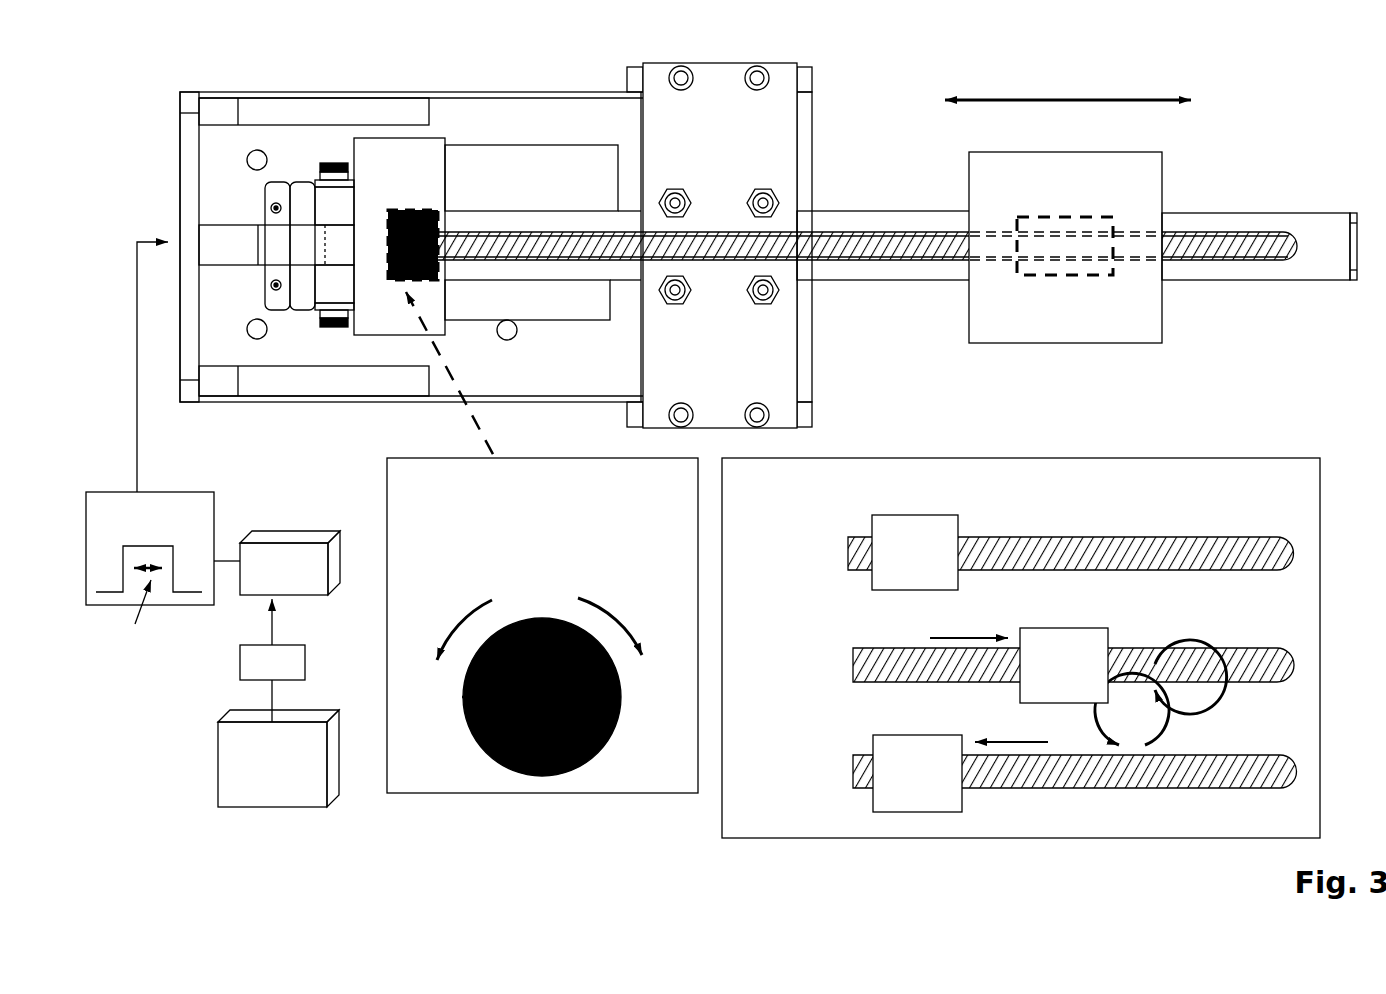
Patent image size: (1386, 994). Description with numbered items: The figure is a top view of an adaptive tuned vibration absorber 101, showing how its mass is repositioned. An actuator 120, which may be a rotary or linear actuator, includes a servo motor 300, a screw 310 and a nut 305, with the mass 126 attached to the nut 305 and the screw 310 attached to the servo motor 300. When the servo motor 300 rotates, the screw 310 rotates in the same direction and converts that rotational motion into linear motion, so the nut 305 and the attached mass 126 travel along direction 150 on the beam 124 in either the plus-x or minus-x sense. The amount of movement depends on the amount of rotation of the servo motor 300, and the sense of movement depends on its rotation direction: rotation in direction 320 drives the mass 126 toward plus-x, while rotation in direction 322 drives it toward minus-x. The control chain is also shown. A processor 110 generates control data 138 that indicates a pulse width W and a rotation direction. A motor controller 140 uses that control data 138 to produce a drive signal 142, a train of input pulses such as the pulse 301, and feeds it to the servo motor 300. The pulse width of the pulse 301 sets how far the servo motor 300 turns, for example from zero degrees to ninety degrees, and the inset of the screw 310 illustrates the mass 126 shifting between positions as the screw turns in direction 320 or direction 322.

The actuator assembly 101 is at (1330, 127).
The actuator 120 is at (430, 152).
The servo motor 300 is at (458, 498).
The screw 310 is at (898, 242).
The nut 305 is at (1036, 218).
The mass 126 is at (1029, 310).
The beam 124 is at (1316, 254).
The direction 150 is at (1067, 97).
The rotation direction 320 is at (902, 640).
The rotation direction 322 is at (790, 676).
The drive signal 142 is at (186, 490).
The pulse 301 is at (148, 543).
The motor controller 140 is at (267, 581).
The control data 138 is at (272, 660).
The processor 110 is at (255, 774).